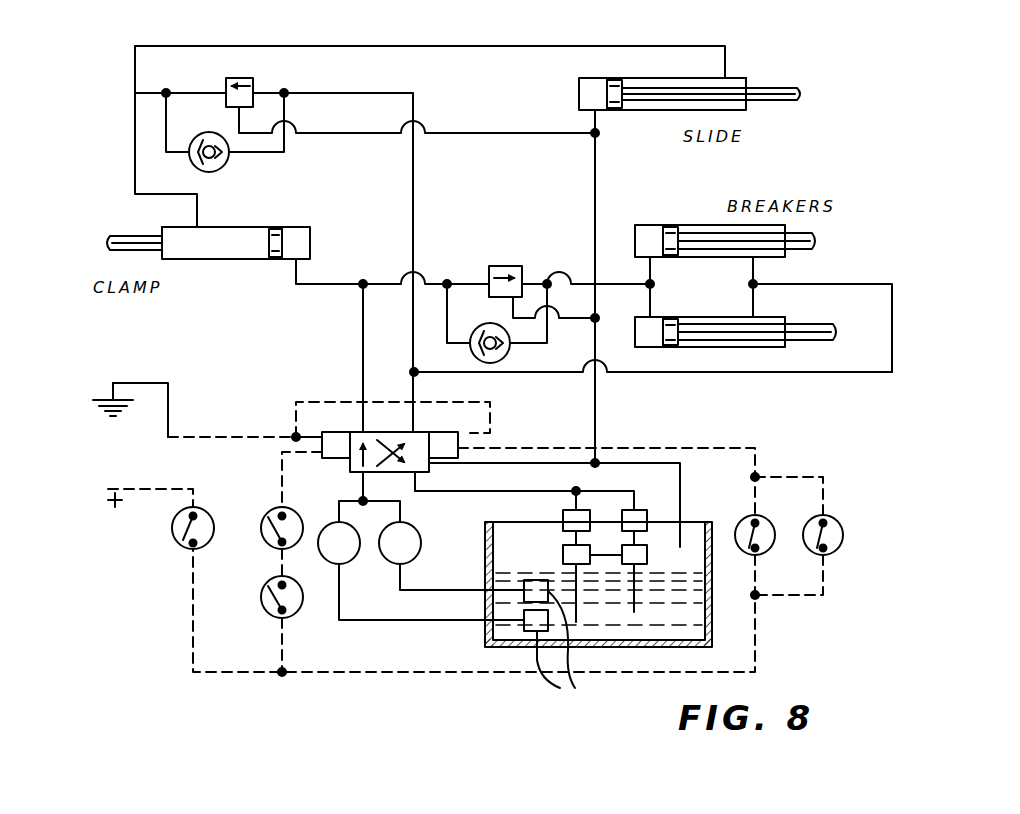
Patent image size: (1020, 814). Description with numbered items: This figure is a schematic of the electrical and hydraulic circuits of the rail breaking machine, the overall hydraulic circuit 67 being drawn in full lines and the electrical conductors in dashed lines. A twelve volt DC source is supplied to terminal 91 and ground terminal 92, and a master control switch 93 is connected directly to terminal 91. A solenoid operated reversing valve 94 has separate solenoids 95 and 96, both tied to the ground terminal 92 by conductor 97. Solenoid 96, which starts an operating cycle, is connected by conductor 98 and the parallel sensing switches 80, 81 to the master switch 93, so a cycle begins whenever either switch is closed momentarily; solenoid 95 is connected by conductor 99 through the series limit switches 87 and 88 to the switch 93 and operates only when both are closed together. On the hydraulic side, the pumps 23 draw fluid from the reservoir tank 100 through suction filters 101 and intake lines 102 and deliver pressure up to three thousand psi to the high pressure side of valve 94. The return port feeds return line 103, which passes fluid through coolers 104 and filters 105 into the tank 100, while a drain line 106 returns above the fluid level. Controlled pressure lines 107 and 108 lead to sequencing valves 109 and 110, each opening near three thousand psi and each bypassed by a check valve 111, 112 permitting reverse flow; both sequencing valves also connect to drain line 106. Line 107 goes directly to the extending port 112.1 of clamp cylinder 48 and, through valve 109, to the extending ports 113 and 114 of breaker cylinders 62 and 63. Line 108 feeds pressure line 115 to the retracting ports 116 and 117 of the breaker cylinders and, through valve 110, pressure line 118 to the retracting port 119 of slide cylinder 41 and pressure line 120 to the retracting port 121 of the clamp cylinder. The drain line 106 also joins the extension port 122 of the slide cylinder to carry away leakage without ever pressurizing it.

The hydraulic circuit 67 is at (430, 39).
The pressure line 118 is at (232, 46).
The pressure line 120 is at (133, 172).
The sequencing valve 110 is at (254, 88).
The bypass check valve 112 is at (229, 165).
The drain line 106 is at (381, 136).
The slide cylinder 41 is at (578, 88).
The retracting port 119 is at (725, 78).
The extension port 122 is at (584, 110).
The clamp cylinder 48 is at (262, 227).
The retracting port 121 is at (197, 227).
The extending port 112.1 is at (300, 259).
The controlled pressure line 107 is at (363, 318).
The controlled pressure line 108 is at (414, 358).
The sequencing valve 109 is at (505, 266).
The bypass check valve 111 is at (511, 352).
The extending port 114 is at (652, 317).
The breaker cylinder 62 is at (660, 225).
The breaker cylinder 63 is at (652, 317).
The extending port 113 is at (636, 256).
The retracting port 116 is at (765, 257).
The retracting port 117 is at (755, 317).
The pressure line 115 is at (640, 372).
The ground terminal 92 is at (168, 437).
The solenoid operated reversing valve 94 is at (360, 432).
The solenoid 95 is at (336, 432).
The solenoid 96 is at (460, 441).
The conductor 97 is at (490, 404).
The conductor 98 is at (745, 448).
The conductor 99 is at (275, 478).
The control switch 87 is at (268, 513).
The control switch 88 is at (262, 606).
The master control switch 93 is at (183, 546).
The terminal 91 is at (158, 490).
The sensing switch 80 is at (761, 523).
The sensing switch 81 is at (830, 521).
The pumps 23 is at (355, 560).
The intake lines 102 is at (448, 594).
The suction filters 101 is at (573, 651).
The reservoir tank 100 is at (483, 554).
The return line 103 is at (490, 494).
The coolers 104 is at (622, 513).
The filters 105 is at (563, 555).